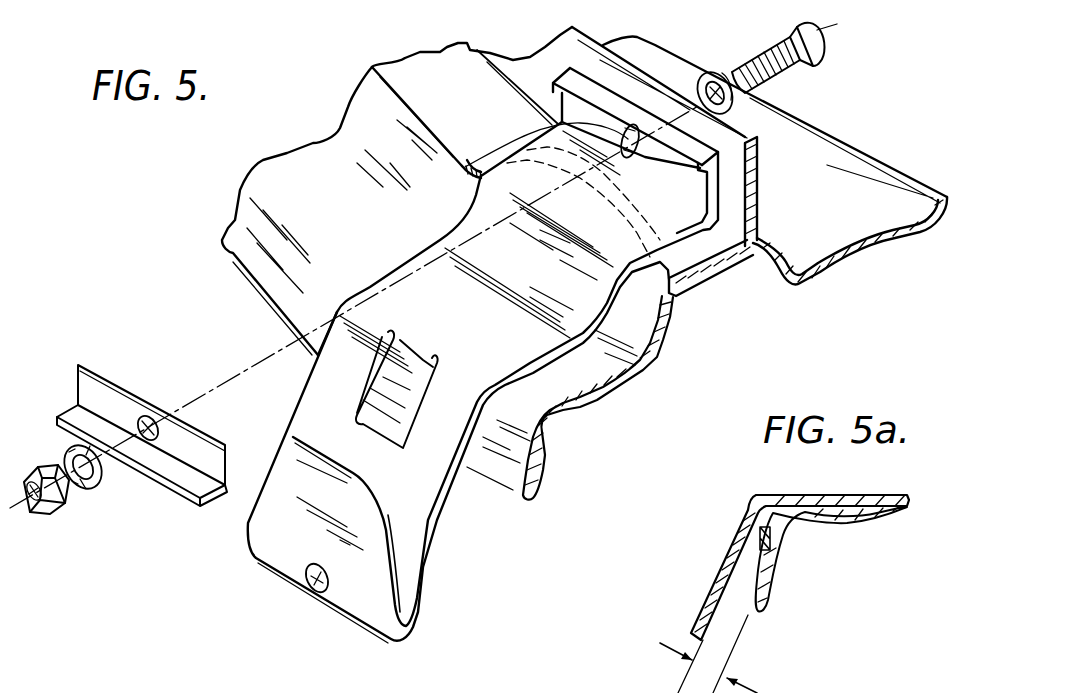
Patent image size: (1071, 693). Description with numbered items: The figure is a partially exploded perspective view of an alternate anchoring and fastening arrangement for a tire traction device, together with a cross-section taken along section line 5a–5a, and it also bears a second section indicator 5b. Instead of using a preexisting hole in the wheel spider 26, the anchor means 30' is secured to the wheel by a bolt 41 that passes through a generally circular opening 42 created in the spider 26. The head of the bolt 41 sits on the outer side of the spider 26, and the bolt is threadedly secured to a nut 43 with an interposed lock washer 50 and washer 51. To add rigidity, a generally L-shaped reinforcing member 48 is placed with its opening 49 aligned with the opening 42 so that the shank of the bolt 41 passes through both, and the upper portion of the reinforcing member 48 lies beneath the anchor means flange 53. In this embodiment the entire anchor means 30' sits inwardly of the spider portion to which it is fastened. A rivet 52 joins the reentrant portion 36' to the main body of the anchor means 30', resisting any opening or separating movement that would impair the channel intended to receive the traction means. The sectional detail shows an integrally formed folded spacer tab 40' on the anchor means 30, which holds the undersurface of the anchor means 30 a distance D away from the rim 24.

In FIG. 5, the rim 24 is at (593, 410).
In FIG. 5a, the rim 24 is at (773, 595).
In FIG. 5, the spider 26 is at (758, 203).
In FIG. 5a, the anchor means 30 is at (800, 547).
In FIG. 5, the anchor means 30' is at (381, 335).
In FIG. 5, the reentrant portion 36' is at (445, 563).
In FIG. 5, the spacer 40' is at (340, 389).
In FIG. 5a, the spacer 40' is at (807, 551).
In FIG. 5, the bolt 41 is at (813, 70).
In FIG. 5, the opening 42 is at (622, 136).
In FIG. 5, the nut 43 is at (57, 513).
In FIG. 5, the reinforcing member 48 is at (177, 500).
In FIG. 5, the opening 49 is at (146, 417).
In FIG. 5, the lock washer 50 is at (98, 488).
In FIG. 5, the washer 51 is at (707, 72).
In FIG. 5, the rivet 52 is at (316, 579).
In FIG. 5, the anchor means flange 53 is at (707, 181).
In FIG. 5, the section line 5a– 5a is at (407, 360).
In FIG. 5, the section line 5b is at (332, 298).
In FIG. 5a, the distance D is at (708, 654).